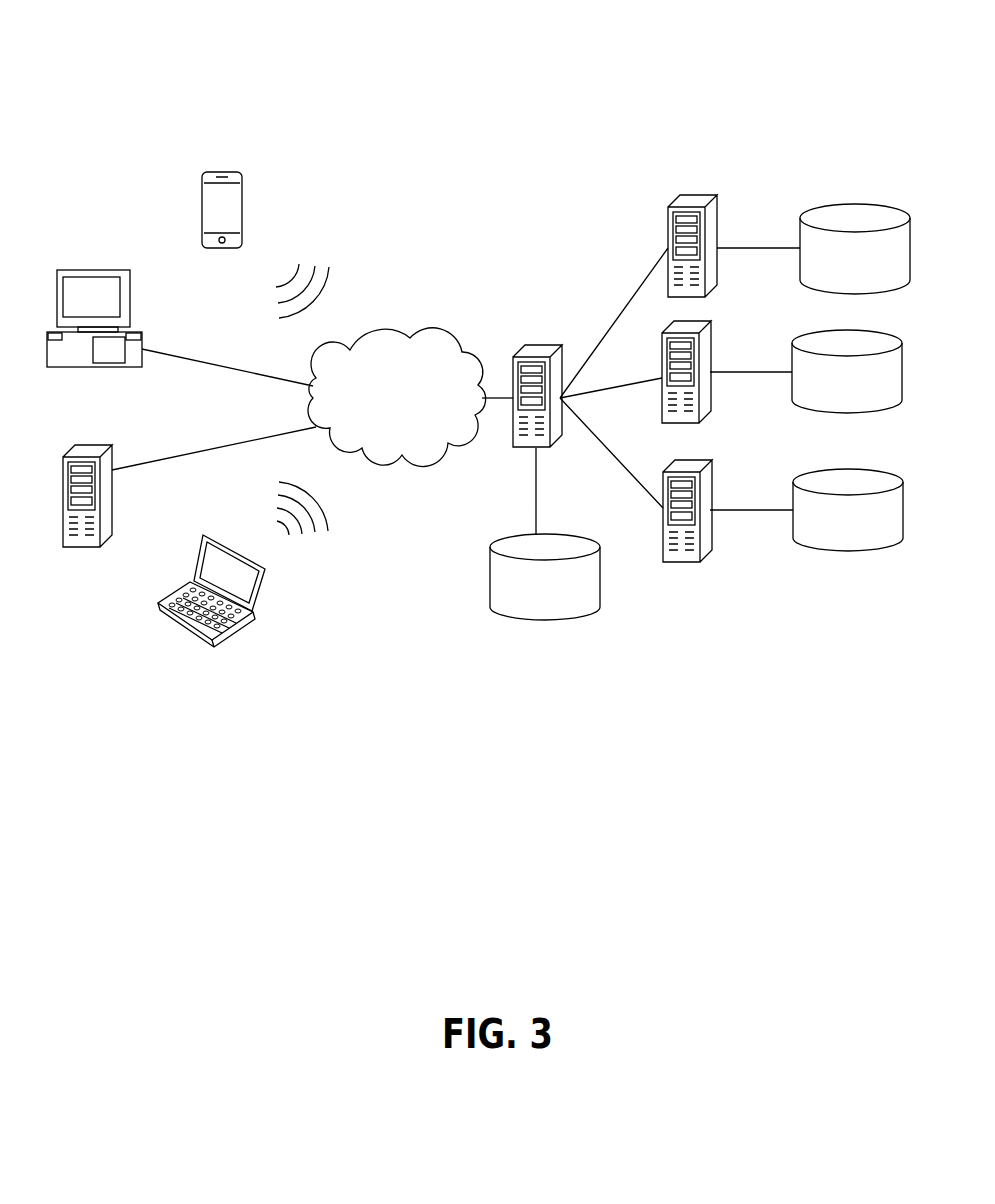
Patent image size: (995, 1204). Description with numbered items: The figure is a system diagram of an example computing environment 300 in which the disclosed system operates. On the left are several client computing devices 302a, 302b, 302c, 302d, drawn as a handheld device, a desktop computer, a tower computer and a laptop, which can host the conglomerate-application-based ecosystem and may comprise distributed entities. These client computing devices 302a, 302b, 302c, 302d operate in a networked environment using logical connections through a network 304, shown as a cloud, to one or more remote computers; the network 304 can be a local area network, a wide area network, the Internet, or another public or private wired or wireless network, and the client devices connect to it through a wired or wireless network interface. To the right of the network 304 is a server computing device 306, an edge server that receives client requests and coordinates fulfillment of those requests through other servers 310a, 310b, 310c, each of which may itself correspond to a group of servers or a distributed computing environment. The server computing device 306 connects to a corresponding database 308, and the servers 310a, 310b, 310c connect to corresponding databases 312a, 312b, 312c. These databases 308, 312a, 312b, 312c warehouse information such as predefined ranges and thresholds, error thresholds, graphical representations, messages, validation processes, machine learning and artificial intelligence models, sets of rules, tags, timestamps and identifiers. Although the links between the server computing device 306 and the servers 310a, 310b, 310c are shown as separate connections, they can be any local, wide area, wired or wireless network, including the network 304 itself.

The environment 300 is at (480, 95).
The client computing device 302a is at (243, 175).
The client computing device 302b is at (130, 272).
The client computing device 302c is at (102, 447).
The client computing device 302d is at (258, 606).
The network 304 is at (413, 345).
The server computing device 306 is at (567, 331).
The database 308 is at (550, 538).
The server 310a is at (712, 198).
The server 310b is at (708, 331).
The server 310c is at (705, 466).
The database 312a is at (866, 207).
The database 312b is at (866, 336).
The database 312c is at (875, 478).